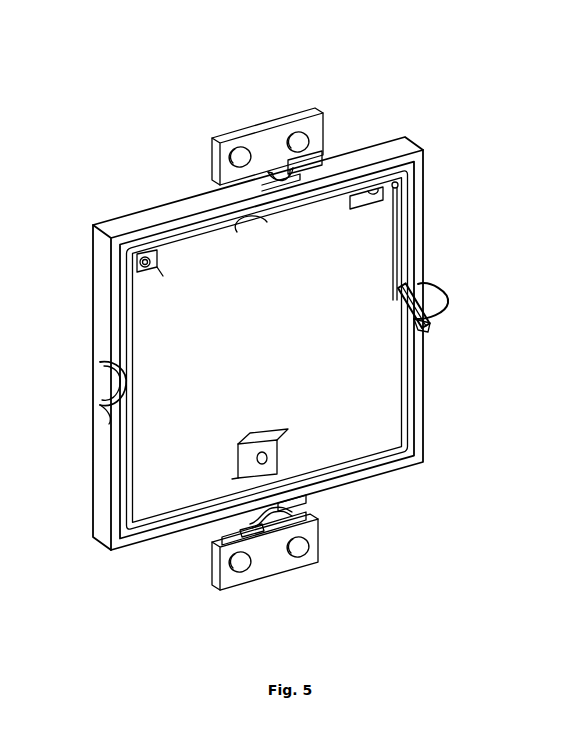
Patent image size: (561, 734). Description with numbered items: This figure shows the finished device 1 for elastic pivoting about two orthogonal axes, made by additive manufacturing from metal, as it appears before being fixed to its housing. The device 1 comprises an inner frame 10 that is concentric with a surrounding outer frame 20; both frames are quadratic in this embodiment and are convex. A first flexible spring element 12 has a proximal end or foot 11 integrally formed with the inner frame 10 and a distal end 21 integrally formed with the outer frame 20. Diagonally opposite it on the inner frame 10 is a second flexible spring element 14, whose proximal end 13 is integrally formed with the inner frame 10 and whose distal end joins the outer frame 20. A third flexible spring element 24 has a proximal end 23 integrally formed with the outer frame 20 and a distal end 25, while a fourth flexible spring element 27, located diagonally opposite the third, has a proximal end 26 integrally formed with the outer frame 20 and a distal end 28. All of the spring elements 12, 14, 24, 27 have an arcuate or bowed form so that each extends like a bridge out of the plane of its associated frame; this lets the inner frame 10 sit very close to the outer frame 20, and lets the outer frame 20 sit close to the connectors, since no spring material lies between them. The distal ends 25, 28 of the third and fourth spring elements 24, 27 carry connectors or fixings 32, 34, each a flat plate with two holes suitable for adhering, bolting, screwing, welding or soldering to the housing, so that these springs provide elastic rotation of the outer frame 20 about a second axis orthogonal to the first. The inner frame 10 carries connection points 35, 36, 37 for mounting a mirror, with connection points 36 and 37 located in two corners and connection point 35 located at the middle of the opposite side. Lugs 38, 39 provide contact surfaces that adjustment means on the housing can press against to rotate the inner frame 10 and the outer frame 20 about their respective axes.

The device for elastic pivoting about two orthogonal axes 1 is at (441, 130).
The inner frame 10 is at (140, 452).
The proximal end (foot) of first spring element 11 is at (128, 362).
The first flexible spring element 12 is at (122, 383).
The proximal end of second spring element 13 is at (413, 292).
The second flexible spring element 14 is at (425, 326).
The outer frame 20 is at (93, 283).
The distal end of first spring element 21 is at (108, 420).
The proximal end of third spring element 23 is at (240, 508).
The third flexible spring element 24 is at (248, 520).
The distal end of third spring element 25 is at (300, 500).
The proximal end of fourth spring element 26 is at (222, 187).
The fourth flexible spring element 27 is at (300, 203).
The distal end of fourth spring element 28 is at (350, 150).
The connector or fixing 32 is at (318, 562).
The connector or fixing 34 is at (280, 118).
The connection point 35 is at (255, 432).
The connection point 36 is at (150, 262).
The connection point 37 is at (350, 205).
The lug 38 is at (437, 291).
The lug 39 is at (240, 230).